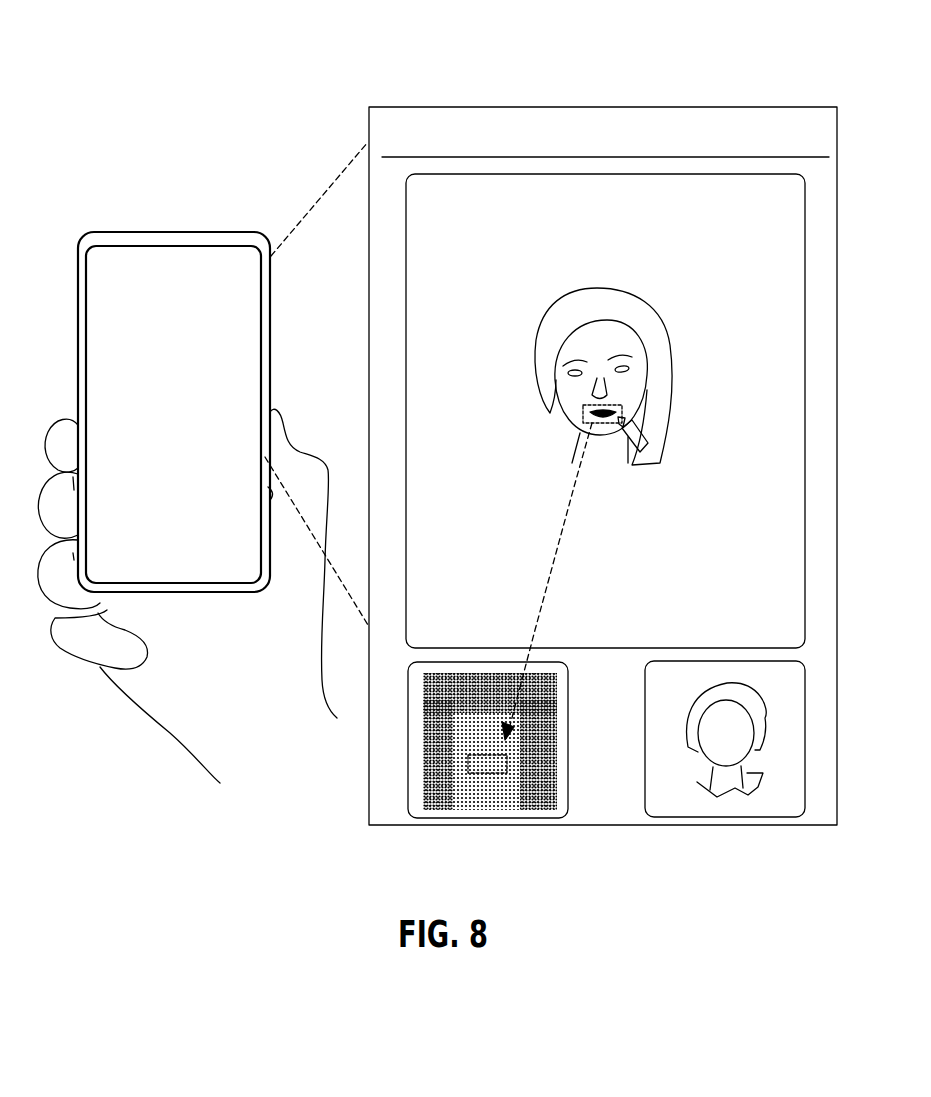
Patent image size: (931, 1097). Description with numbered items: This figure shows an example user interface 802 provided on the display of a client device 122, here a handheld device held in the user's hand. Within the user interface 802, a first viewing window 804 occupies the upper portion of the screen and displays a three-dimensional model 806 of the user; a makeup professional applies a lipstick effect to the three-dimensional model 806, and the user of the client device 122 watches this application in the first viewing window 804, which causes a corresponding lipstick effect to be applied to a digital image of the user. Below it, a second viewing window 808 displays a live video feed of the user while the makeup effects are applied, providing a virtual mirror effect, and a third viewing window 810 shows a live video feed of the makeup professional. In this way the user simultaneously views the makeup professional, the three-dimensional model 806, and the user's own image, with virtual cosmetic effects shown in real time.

The client device 122 is at (167, 232).
The user interface 802 is at (740, 90).
The first viewing window 804 is at (407, 293).
The 3D model 806 is at (663, 318).
The second viewing window 808 is at (407, 750).
The third viewing window 810 is at (645, 795).